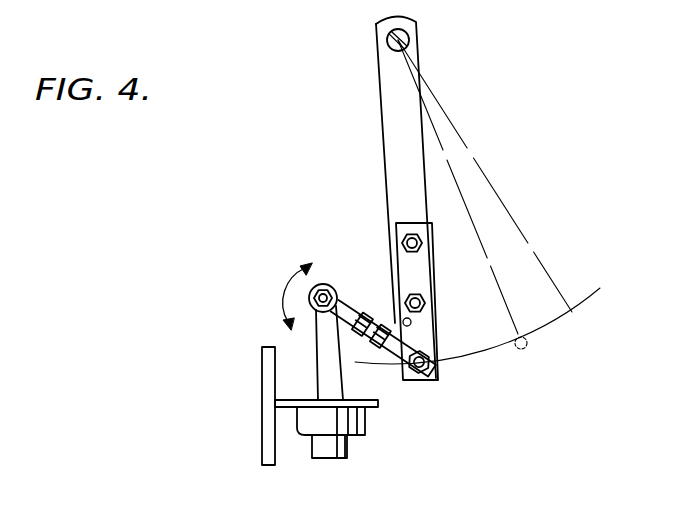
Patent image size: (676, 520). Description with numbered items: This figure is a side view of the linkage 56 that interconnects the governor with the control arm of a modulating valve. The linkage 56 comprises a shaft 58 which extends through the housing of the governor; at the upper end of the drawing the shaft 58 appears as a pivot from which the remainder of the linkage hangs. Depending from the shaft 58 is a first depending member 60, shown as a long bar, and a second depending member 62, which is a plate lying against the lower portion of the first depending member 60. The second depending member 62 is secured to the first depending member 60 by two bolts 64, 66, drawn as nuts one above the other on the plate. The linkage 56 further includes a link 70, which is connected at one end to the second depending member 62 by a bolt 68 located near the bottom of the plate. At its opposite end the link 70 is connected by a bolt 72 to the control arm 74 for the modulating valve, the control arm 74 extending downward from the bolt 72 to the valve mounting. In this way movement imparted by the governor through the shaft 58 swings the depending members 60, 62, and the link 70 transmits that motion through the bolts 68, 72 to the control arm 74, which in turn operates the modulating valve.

The linkage 56 is at (384, 221).
The shaft 58 is at (409, 38).
The first depending member 60 is at (396, 156).
The second depending member 62 is at (424, 341).
The bolt 64 is at (422, 243).
The bolt 66 is at (427, 303).
The bolt 68 is at (425, 378).
The link 70 is at (350, 313).
The bolt 72 is at (323, 294).
The control arm 74 is at (328, 375).